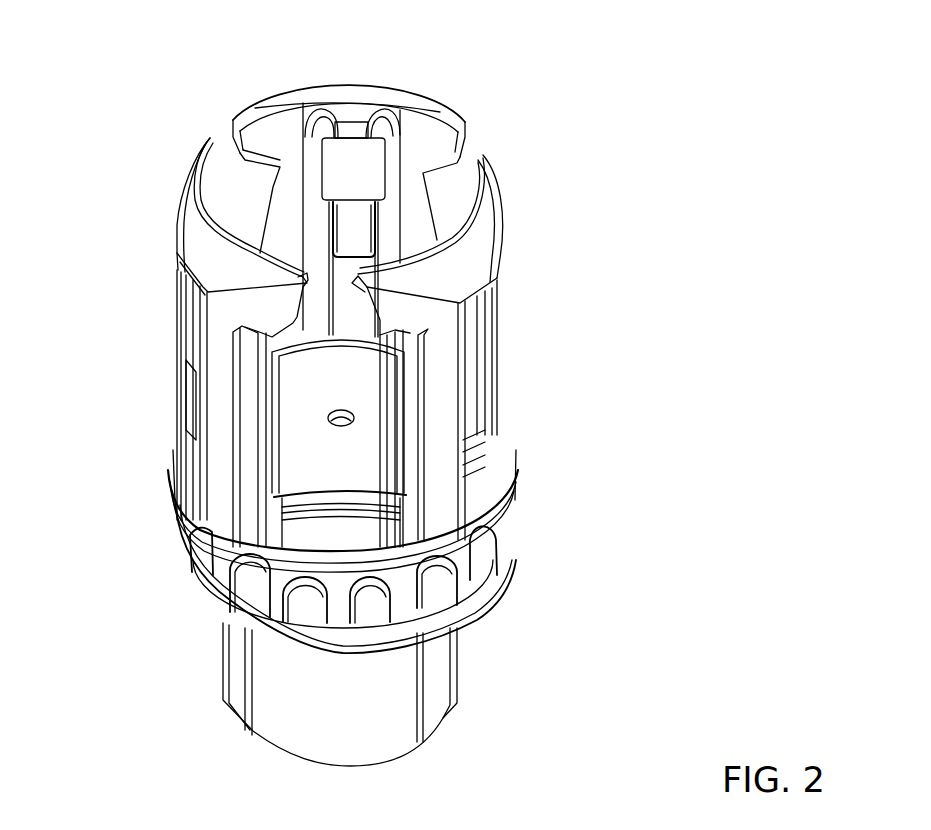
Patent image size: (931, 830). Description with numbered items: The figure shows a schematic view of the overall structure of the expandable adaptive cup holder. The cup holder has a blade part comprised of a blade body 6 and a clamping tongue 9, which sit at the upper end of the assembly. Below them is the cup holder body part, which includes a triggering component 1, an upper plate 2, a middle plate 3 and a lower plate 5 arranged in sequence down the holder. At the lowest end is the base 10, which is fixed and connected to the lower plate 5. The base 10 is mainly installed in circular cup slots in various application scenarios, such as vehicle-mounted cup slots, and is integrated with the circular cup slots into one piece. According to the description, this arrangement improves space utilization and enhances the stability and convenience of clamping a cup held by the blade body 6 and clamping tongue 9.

The triggering component 1 is at (342, 455).
The upper plate 2 is at (328, 530).
The middle plate 3 is at (405, 589).
The lower plate 5 is at (285, 632).
The blade body 6 is at (286, 147).
The clamping tongue 9 is at (362, 168).
The base 10 is at (390, 728).